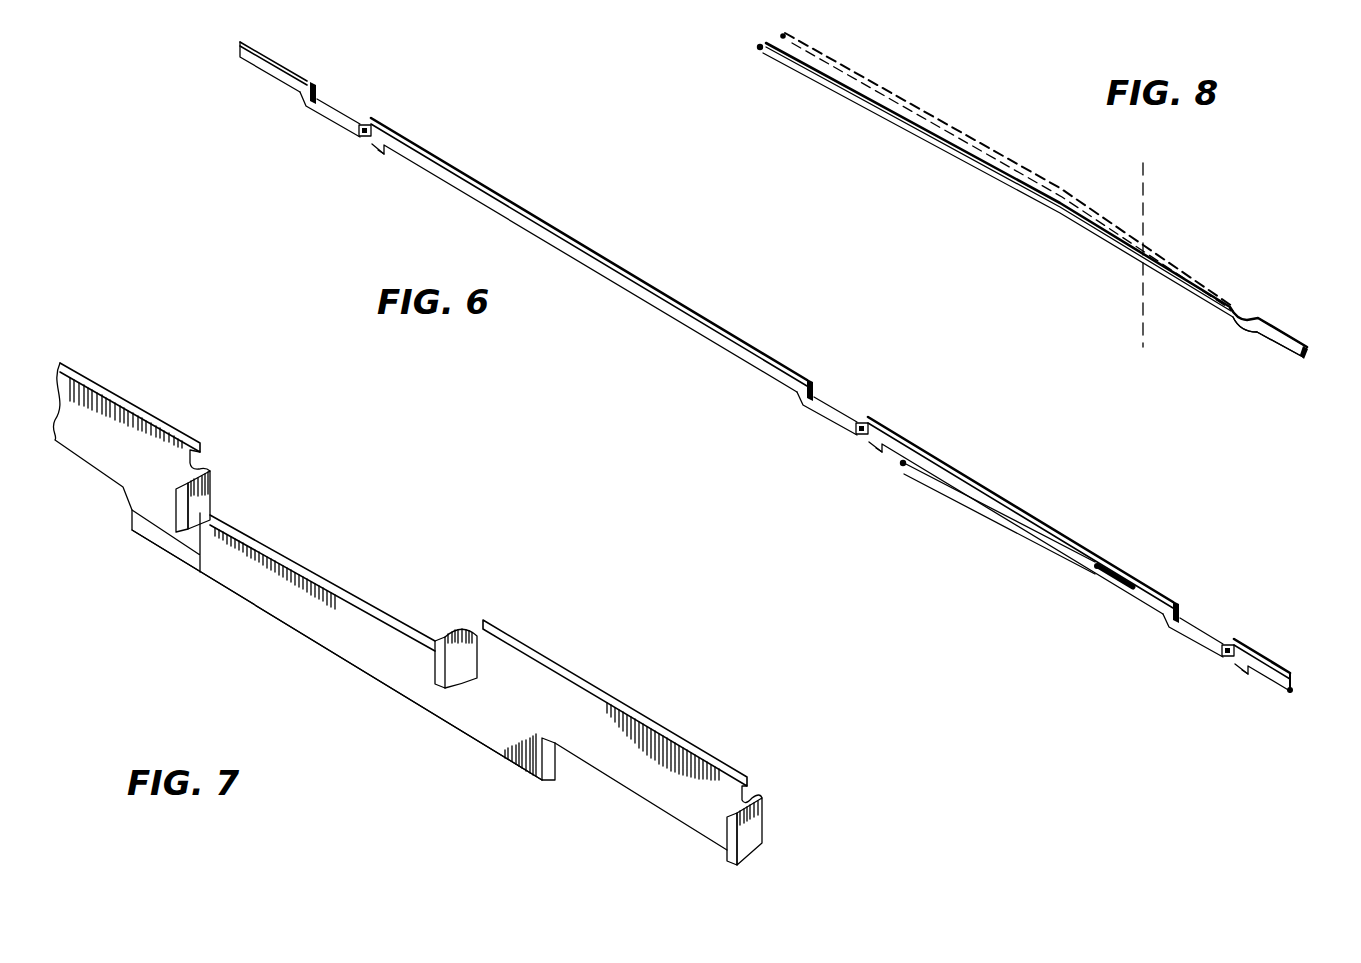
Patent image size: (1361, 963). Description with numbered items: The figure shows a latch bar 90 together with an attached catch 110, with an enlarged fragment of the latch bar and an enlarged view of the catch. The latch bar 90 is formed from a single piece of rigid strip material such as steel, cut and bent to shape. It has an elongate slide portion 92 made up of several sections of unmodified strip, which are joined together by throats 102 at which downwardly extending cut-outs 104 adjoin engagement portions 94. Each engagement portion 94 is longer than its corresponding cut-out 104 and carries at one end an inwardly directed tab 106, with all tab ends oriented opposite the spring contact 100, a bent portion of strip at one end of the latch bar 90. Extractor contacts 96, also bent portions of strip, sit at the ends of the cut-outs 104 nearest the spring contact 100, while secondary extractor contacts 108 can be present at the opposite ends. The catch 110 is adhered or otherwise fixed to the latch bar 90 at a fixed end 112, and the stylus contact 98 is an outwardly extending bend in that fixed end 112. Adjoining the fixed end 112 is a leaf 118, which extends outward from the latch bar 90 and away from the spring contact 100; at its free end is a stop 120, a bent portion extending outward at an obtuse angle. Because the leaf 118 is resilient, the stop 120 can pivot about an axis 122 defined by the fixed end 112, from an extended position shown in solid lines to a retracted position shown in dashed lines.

In FIG. 6, the latch bar 90 is at (698, 285).
In FIG. 7, the latch bar 90 is at (596, 658).
In FIG. 6, the slide portion 92 is at (533, 220).
In FIG. 7, the slide portion 92 is at (127, 398).
In FIG. 6, the engagement portion 94 is at (381, 154).
In FIG. 7, the engagement portion 94 is at (490, 754).
In FIG. 6, the extractor contact 96 is at (360, 119).
In FIG. 7, the extractor contact 96 is at (448, 623).
In FIG. 6, the stylus contact 98 is at (1097, 568).
In FIG. 8, the stylus contact 98 is at (1246, 333).
In FIG. 6, the spring contact 100 is at (1292, 690).
In FIG. 7, the spring contact 100 is at (754, 843).
In FIG. 7, the throat 102 is at (367, 665).
In FIG. 6, the cut-out 104 is at (765, 349).
In FIG. 7, the cut-out 104 is at (299, 564).
In FIG. 6, the tab 106 is at (302, 109).
In FIG. 7, the tab 106 is at (178, 556).
In FIG. 6, the secondary extractor contact 108 is at (312, 86).
In FIG. 7, the secondary extractor contact 108 is at (212, 496).
In FIG. 6, the catch 110 is at (1002, 546).
In FIG. 8, the catch 110 is at (1023, 205).
In FIG. 6, the fixed end 112 is at (1110, 580).
In FIG. 8, the fixed end 112 is at (1287, 331).
In FIG. 6, the leaf 118 is at (1010, 520).
In FIG. 8, the leaf 118 is at (1007, 187).
In FIG. 6, the stop 120 is at (903, 466).
In FIG. 8, the stop 120 is at (763, 52).
In FIG. 8, the axis 122 is at (1143, 217).